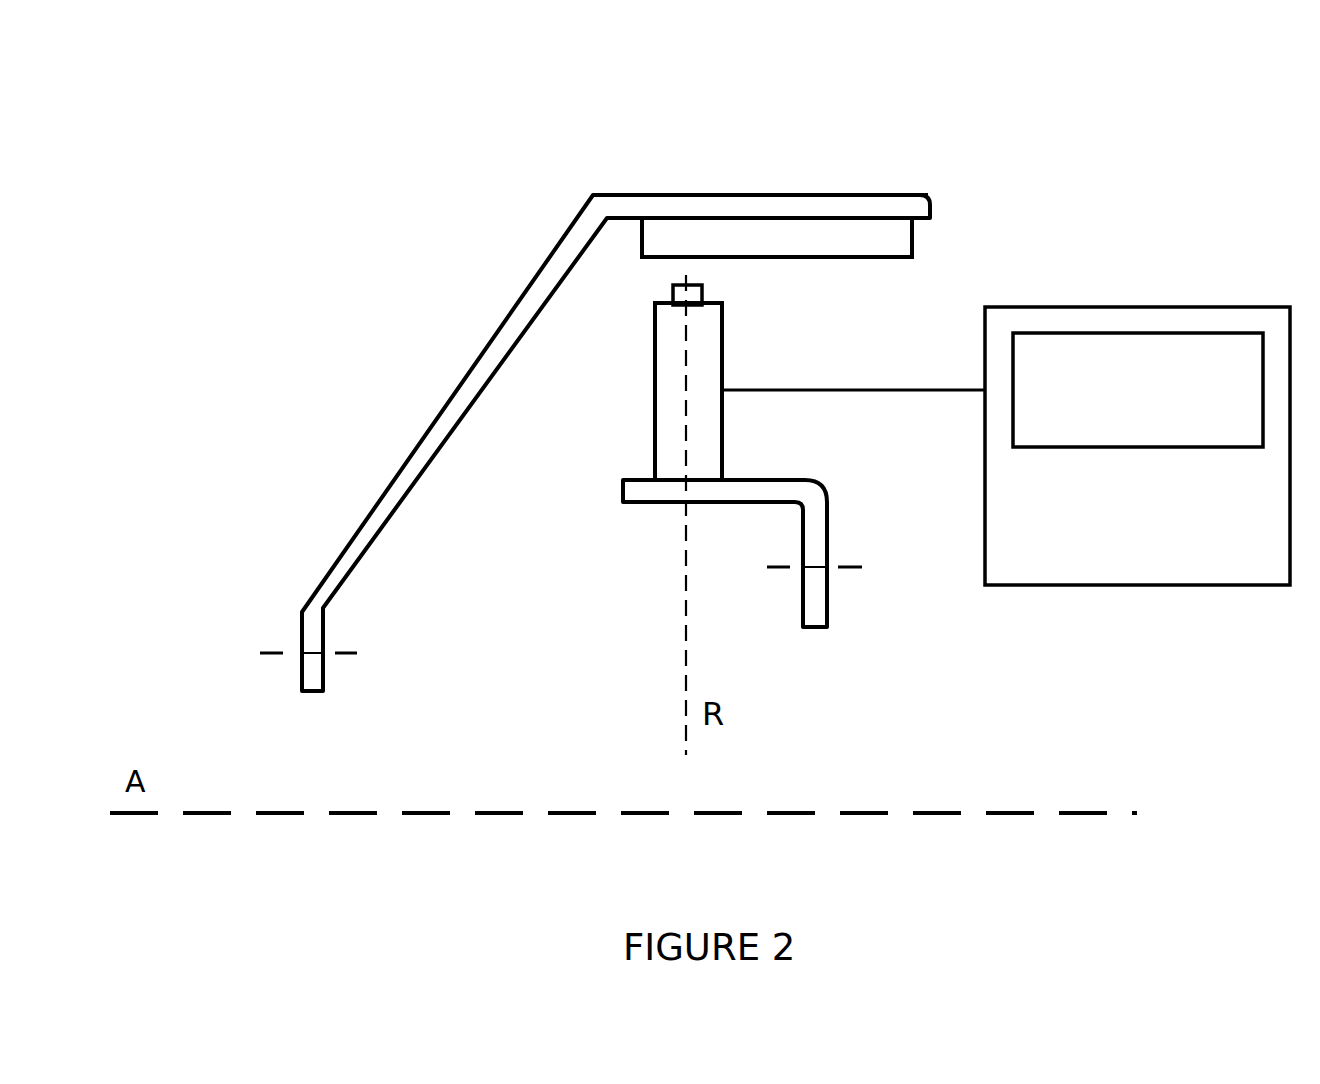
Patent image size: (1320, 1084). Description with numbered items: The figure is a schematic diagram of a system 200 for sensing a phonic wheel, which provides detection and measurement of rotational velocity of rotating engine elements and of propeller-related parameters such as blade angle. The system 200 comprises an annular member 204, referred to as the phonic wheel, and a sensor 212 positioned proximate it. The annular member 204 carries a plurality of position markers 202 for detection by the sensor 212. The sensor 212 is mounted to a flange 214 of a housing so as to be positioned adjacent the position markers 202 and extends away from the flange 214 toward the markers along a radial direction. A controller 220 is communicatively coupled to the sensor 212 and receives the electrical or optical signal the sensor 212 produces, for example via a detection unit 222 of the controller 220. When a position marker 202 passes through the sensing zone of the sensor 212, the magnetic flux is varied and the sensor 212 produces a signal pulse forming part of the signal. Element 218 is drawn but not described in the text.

The system 200 is at (340, 166).
The position markers 202 is at (753, 235).
The annular member 204 is at (317, 577).
The sensor 212 is at (650, 373).
The flange 214 is at (623, 483).
The mounting plate 218 is at (931, 222).
The controller 220 is at (1165, 573).
The detection unit 222 is at (1165, 426).